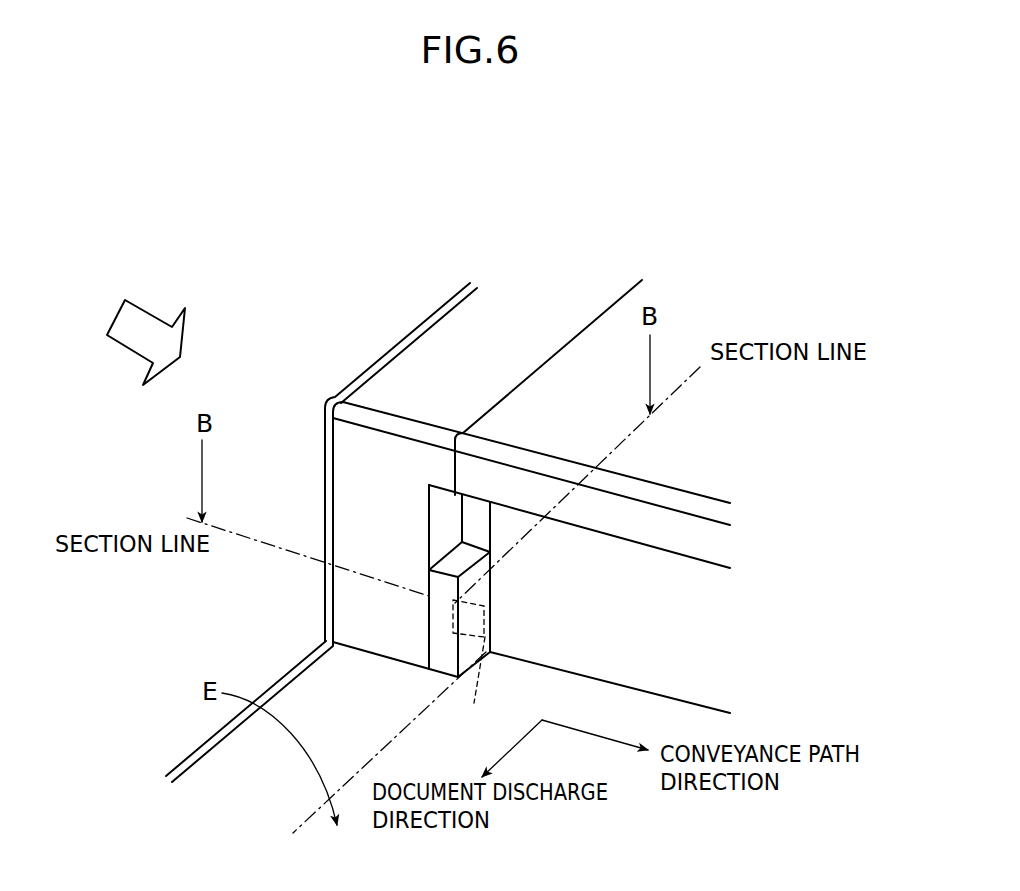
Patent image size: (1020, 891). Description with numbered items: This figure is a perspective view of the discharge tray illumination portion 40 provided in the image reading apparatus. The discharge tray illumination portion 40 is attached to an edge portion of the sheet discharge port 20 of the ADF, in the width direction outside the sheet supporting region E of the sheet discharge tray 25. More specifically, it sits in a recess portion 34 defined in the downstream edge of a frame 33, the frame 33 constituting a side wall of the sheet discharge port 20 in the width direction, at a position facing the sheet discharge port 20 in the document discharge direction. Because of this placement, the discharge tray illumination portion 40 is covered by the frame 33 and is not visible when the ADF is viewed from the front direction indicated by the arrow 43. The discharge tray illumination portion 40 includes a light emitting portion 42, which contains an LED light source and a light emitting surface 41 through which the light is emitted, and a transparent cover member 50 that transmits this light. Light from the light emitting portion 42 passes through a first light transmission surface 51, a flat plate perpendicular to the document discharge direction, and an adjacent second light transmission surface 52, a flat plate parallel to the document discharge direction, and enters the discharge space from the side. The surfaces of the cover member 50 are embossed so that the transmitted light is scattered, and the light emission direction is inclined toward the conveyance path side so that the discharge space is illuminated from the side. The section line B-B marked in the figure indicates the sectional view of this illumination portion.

The sheet discharge port 20 is at (632, 638).
The sheet discharge tray 25 is at (307, 660).
The frame 33 is at (323, 462).
The recess portion 34 is at (458, 524).
The discharge tray illumination portion 40 is at (508, 593).
The light emitting surface 41 is at (486, 607).
The light emitting portion 42 is at (478, 683).
The arrow 43 is at (150, 300).
The cover member 50 is at (440, 680).
The first light transmission surface 51 is at (440, 648).
The second light transmission surface 52 is at (482, 585).